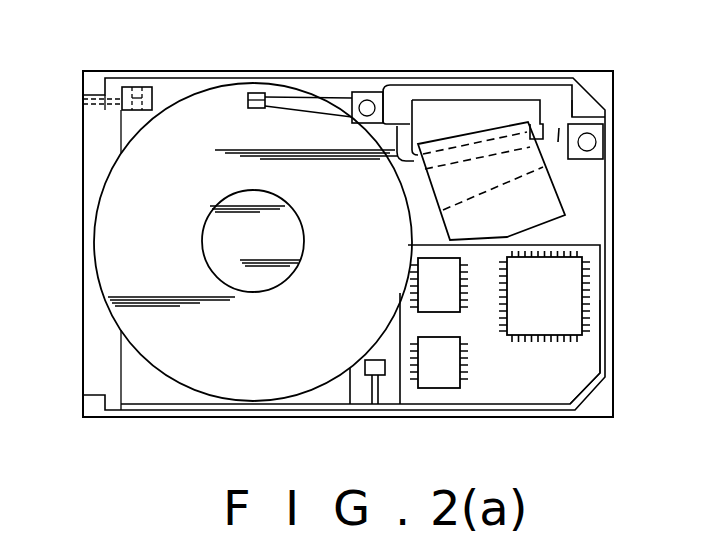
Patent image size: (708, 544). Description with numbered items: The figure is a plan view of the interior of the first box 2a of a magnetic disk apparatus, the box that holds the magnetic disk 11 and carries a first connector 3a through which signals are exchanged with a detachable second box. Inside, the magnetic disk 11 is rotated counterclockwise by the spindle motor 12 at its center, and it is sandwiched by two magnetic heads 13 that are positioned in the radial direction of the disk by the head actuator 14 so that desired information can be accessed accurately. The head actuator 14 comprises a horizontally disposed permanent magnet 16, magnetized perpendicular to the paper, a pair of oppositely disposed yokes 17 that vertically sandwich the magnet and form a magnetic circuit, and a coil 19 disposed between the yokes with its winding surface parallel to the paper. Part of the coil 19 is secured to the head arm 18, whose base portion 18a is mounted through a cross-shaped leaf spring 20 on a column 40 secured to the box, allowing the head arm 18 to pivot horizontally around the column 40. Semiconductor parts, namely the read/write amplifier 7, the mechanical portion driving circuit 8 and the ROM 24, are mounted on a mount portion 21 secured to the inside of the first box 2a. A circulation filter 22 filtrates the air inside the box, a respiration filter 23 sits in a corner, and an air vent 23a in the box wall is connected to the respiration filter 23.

The first box 2a is at (147, 420).
The first connector 3a is at (98, 351).
The read/write amplifier 7 is at (432, 285).
The mechanical portion driving circuit 8 is at (553, 327).
The magnetic disk 11 is at (255, 392).
The spindle motor 12 is at (292, 240).
The magnetic heads 13 is at (257, 93).
The head actuator 14 is at (512, 84).
The permanent magnet 16 is at (540, 212).
The yokes 17 is at (573, 198).
The head arm 18 is at (450, 99).
The base portion 18a is at (557, 104).
The coil 19 is at (413, 167).
The cross-shaped leaf spring 20 is at (561, 147).
The mount portion 21 is at (587, 340).
The circulation filter 22 is at (385, 393).
The respiration filter 23 is at (152, 103).
The air vent 23a is at (105, 110).
The ROM 24 is at (450, 365).
The column 40 is at (587, 142).